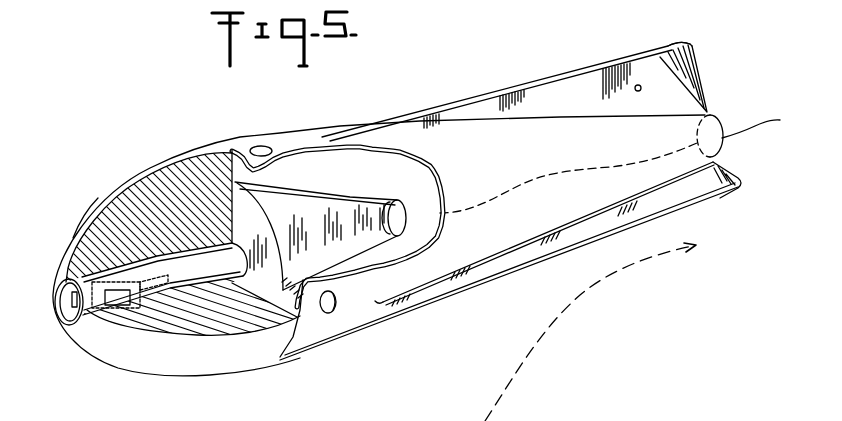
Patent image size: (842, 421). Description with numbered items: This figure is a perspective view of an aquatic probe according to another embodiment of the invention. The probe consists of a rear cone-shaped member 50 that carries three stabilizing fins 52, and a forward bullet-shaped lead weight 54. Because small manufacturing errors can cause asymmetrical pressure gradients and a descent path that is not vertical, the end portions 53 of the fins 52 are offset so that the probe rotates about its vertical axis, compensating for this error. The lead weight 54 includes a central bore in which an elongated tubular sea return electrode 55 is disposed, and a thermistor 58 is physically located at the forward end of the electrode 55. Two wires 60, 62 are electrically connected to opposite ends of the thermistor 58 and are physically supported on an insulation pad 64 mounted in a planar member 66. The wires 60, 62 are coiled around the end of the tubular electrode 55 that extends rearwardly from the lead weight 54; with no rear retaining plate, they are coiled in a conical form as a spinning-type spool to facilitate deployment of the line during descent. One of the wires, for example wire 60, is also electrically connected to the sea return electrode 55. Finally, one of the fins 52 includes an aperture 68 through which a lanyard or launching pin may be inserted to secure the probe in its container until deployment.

The rear cone-shaped member 50 is at (460, 133).
The stabilizing fins 52 is at (680, 95).
The end portions of fins 53 is at (688, 44).
The lead weight 54 is at (140, 367).
The sea return electrode 55 is at (192, 258).
The thermistor 58 is at (66, 318).
The wire 60 is at (147, 276).
The wire 62 is at (148, 333).
The insulation pad 64 is at (112, 282).
The planar member 66 is at (97, 328).
The aperture 68 is at (635, 86).